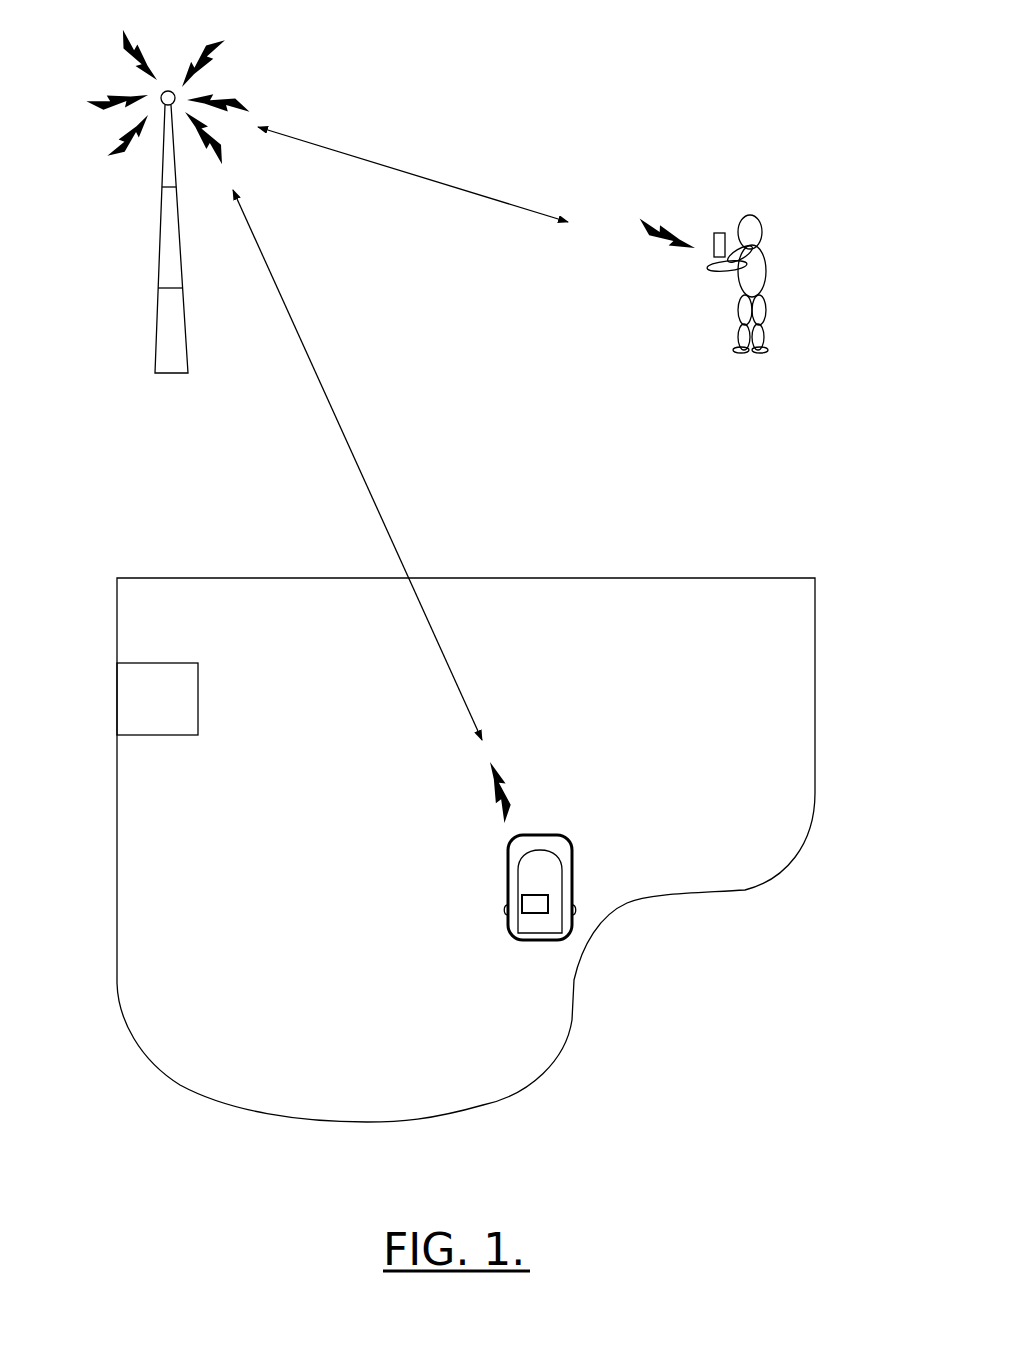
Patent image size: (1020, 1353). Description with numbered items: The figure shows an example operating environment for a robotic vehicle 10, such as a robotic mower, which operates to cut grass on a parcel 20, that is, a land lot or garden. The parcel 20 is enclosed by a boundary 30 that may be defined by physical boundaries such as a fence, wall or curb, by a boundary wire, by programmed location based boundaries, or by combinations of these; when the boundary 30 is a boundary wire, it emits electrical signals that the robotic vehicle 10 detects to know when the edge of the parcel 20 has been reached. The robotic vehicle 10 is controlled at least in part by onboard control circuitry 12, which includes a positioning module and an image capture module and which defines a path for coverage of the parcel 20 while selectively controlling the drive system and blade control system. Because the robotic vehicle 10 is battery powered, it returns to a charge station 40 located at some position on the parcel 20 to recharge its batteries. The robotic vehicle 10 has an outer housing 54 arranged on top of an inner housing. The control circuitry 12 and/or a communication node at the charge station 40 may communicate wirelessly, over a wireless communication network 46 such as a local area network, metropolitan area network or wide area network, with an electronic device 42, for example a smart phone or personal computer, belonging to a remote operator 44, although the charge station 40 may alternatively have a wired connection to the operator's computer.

The robotic vehicle 10 is at (586, 866).
The control circuitry 12 is at (541, 893).
The parcel 20 is at (342, 926).
The boundary 30 is at (573, 1027).
The charge station 40 is at (142, 695).
The electronic device 42 is at (718, 223).
The remote operator 44 is at (792, 222).
The wireless communication network 46 is at (300, 323).
The outer housing 54 is at (533, 836).